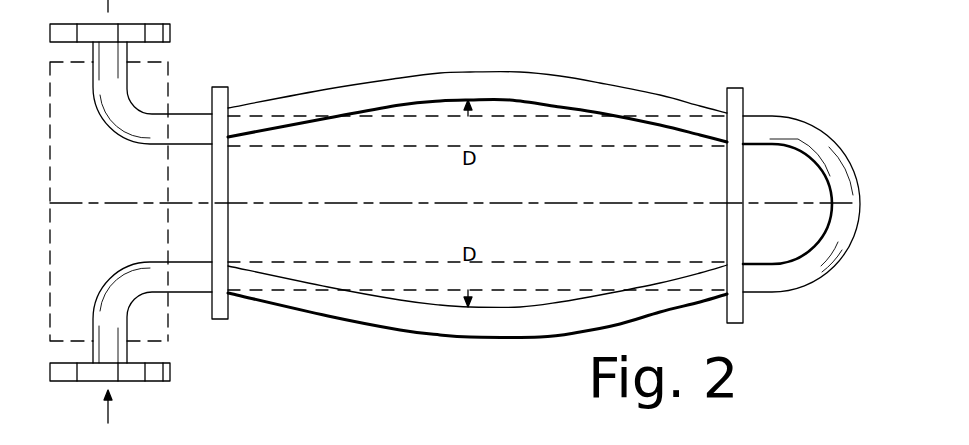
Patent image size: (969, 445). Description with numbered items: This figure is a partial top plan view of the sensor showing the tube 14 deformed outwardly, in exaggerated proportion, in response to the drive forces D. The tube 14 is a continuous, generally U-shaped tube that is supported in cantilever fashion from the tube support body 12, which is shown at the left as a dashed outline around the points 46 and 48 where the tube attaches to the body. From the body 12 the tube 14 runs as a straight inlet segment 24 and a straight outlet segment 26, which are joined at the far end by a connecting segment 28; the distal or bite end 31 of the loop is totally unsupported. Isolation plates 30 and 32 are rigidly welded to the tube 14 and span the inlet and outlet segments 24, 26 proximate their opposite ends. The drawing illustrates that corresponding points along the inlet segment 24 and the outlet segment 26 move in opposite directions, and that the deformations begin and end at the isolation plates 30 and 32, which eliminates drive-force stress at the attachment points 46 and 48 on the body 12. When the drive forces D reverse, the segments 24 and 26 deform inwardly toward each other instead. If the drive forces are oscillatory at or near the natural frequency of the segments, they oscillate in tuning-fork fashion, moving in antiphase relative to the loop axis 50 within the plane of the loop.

The tube support body 12 is at (52, 288).
The tube 14 is at (477, 210).
The straight inlet segment 24 is at (500, 329).
The straight outlet segment 26 is at (500, 80).
The connecting segment 28 is at (832, 199).
The isolation plate 30 is at (228, 92).
The bite end 31 is at (860, 228).
The isolation plate 32 is at (747, 115).
The point of attachment 46 is at (168, 113).
The point of attachment 48 is at (168, 290).
The loop axis 50 is at (334, 203).